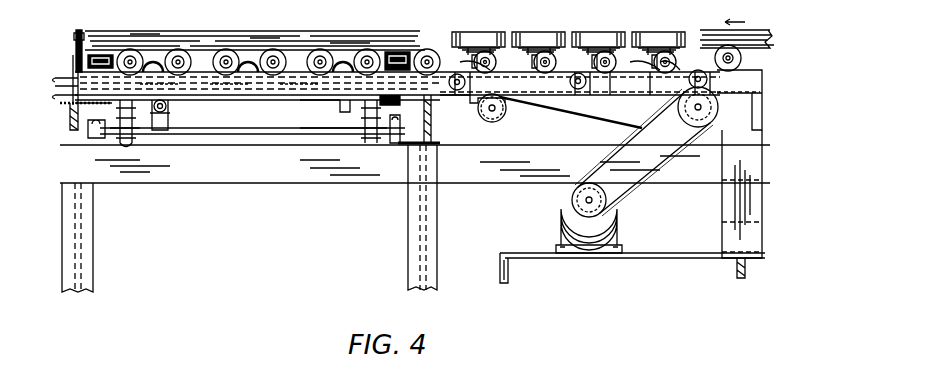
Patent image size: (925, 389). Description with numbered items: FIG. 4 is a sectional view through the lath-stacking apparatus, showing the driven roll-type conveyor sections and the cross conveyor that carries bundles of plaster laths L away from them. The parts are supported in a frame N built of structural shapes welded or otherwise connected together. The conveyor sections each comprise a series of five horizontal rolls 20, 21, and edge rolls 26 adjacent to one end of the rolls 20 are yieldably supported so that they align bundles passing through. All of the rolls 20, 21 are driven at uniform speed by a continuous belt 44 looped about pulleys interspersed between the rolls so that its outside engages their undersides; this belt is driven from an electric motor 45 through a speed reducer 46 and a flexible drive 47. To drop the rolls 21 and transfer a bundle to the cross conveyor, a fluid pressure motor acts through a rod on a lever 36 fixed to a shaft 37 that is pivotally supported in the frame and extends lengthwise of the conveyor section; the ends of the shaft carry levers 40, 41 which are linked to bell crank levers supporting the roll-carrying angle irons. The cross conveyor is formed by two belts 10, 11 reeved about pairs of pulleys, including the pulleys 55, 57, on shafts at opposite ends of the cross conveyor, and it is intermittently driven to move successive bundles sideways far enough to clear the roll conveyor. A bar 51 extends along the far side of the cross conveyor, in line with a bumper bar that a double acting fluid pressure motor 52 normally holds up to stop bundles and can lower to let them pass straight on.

The bundles of plaster laths L is at (262, 29).
The frame N is at (93, 241).
The belt 10 is at (400, 50).
The belt 11 is at (97, 55).
The horizontal rolls 20 is at (482, 72).
The horizontal rolls 21 is at (240, 62).
The edge rolls 26 is at (478, 36).
The lever 36 is at (172, 115).
The shaft 37 is at (236, 138).
The lever 40 is at (360, 123).
The lever 41 is at (143, 140).
The continuous belt 44 is at (204, 76).
The electric motor 45 is at (622, 236).
The speed reducer 46 is at (566, 217).
The flexible drive 47 is at (633, 190).
The bar 51 is at (75, 48).
The double acting fluid pressure motor 52 is at (72, 70).
The pulley 55 is at (436, 113).
The pulley 57 is at (58, 88).